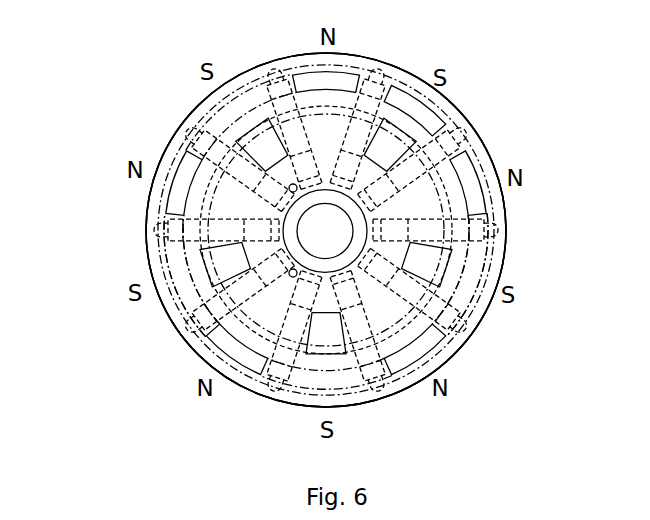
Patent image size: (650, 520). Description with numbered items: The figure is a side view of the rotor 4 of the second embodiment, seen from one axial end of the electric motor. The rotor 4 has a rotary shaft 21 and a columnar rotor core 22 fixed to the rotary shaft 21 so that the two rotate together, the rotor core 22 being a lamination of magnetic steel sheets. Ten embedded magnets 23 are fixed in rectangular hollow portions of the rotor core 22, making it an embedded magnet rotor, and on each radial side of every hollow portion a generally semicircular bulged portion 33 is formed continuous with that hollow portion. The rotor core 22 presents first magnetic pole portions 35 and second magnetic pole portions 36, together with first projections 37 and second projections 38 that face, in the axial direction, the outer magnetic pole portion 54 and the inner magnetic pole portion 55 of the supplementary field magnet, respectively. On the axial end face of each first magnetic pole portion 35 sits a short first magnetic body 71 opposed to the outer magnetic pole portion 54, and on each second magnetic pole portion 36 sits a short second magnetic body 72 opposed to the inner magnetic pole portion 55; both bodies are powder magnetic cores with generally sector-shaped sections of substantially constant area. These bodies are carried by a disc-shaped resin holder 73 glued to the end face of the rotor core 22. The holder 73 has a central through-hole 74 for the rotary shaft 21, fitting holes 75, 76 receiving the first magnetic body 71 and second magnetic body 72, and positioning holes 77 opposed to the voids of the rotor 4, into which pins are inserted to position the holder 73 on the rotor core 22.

The rotor 4 is at (44, 72).
The rotary shaft 21 is at (326, 189).
The rotor core 22 is at (358, 56).
The embedded magnet 23 is at (460, 331).
The bulged portion 33 is at (497, 128).
The first magnetic pole portion 35 is at (283, 63).
The second magnetic pole portion 36 is at (203, 108).
The first projection 37 is at (524, 184).
The second projection 38 is at (513, 274).
The outer magnetic pole portion 54 is at (459, 101).
The inner magnetic pole portion 55 is at (432, 88).
The first magnetic body 71 is at (475, 199).
The second magnetic body 72 is at (440, 263).
The holder 73 is at (486, 146).
The through-hole 74 is at (283, 216).
The fitting hole 75 is at (150, 204).
The fitting hole 76 is at (192, 290).
The positioning hole 77 is at (291, 278).